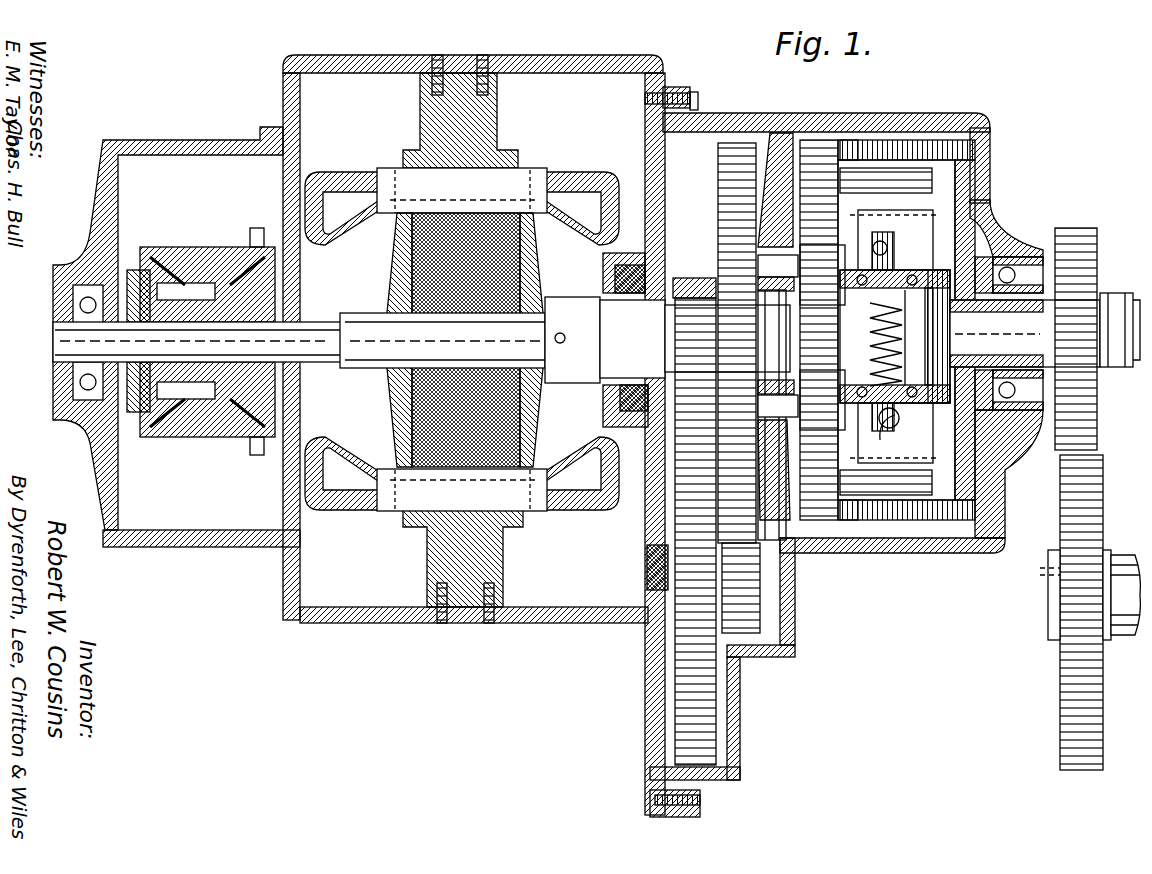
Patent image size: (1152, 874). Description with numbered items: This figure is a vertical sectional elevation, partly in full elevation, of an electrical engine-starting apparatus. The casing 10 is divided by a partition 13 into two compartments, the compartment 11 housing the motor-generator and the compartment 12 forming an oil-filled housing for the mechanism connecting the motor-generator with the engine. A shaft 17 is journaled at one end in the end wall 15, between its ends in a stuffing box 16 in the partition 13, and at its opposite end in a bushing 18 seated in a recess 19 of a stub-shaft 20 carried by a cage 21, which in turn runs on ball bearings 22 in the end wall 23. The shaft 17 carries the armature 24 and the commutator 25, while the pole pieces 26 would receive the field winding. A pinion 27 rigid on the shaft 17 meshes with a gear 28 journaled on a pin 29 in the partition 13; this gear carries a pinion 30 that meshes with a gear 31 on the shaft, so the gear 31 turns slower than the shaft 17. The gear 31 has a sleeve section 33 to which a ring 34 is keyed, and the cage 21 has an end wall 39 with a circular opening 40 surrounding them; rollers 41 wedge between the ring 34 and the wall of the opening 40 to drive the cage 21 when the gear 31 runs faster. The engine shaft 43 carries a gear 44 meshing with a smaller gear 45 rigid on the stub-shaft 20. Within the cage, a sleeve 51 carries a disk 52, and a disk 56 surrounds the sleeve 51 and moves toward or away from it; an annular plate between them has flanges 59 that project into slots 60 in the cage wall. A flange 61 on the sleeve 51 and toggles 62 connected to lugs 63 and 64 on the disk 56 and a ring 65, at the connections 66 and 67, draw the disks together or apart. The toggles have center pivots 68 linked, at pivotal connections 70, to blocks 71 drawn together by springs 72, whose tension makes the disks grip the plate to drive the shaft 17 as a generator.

The casing 10 is at (612, 624).
The compartment 11 is at (560, 617).
The compartment 12 is at (703, 125).
The partition 13 is at (643, 137).
The end wall 15 is at (100, 450).
The stuffing box 16 is at (632, 470).
The shaft 17 is at (421, 340).
The bushing 18 is at (1025, 333).
The recess 19 is at (997, 330).
The stub-shaft 20 is at (1045, 375).
The cage 21 is at (975, 495).
The ball bearings 22 is at (1012, 268).
The end wall 23 is at (1005, 530).
The armature 24 is at (390, 396).
The commutator 25 is at (201, 325).
The pole pieces 26 is at (487, 120).
The pinion 27 is at (684, 290).
The gear 28 is at (690, 490).
The pin 29 is at (655, 578).
The pinion 30 is at (762, 597).
The gear 31 is at (720, 205).
The sleeve section 33 is at (771, 415).
The ring 34 is at (790, 291).
The end wall 39 is at (810, 555).
The circular opening 40 is at (790, 236).
The rollers 41 is at (782, 268).
The engine shaft 43 is at (1125, 632).
The gear 44 is at (1085, 530).
The gear 45 is at (1075, 238).
The sleeve 51 is at (897, 344).
The disk 52 is at (876, 336).
The disk 56 is at (850, 155).
The flanges 59 is at (808, 140).
The slots 60 is at (915, 140).
The flange 61 is at (905, 425).
The toggles 62 is at (897, 245).
The lugs 63 is at (853, 290).
The lugs 64 is at (915, 337).
The ring 65 is at (990, 232).
The connection 66 is at (856, 300).
The connection 67 is at (908, 276).
The center pivots 68 is at (877, 325).
The pivotal connection 70 is at (883, 232).
The blocks 71 is at (875, 183).
The springs 72 is at (937, 336).